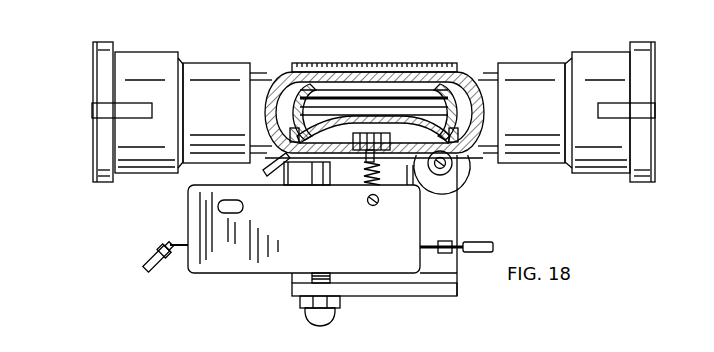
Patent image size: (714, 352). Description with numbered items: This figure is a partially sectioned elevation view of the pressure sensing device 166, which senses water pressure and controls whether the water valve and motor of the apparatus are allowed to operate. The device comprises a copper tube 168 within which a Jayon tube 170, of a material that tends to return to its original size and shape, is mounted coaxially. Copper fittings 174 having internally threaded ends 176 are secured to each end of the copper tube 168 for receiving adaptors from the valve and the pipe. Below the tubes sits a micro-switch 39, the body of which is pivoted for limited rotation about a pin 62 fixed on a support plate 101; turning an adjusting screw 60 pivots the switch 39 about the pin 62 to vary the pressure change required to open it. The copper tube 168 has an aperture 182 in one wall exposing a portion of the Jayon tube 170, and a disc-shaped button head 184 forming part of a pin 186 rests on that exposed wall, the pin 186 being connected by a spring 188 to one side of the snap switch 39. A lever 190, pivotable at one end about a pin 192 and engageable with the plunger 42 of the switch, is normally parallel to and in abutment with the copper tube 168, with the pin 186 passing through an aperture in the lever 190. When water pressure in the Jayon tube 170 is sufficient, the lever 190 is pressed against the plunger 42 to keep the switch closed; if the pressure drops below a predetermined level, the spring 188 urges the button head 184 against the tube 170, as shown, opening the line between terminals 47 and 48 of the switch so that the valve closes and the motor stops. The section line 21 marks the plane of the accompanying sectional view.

The section line 21 is at (373, 22).
The micro-switch 39 is at (304, 229).
The plunger 42 is at (290, 175).
The terminal 47 is at (430, 251).
The terminal 48 is at (170, 244).
The adjusting screw 60 is at (333, 318).
The pin 62 is at (379, 202).
The support plate 101 is at (455, 222).
The pressure sensing device 166 is at (203, 44).
The copper tube 168 is at (483, 78).
The Jayon tube 170 is at (432, 88).
The copper fitting 174 is at (155, 170).
The internally threaded end 176 is at (92, 172).
The aperture 182 is at (403, 130).
The button head 184 is at (353, 128).
The pin 186 is at (380, 160).
The spring 188 is at (364, 172).
The lever 190 is at (263, 172).
The pin 192 is at (452, 163).